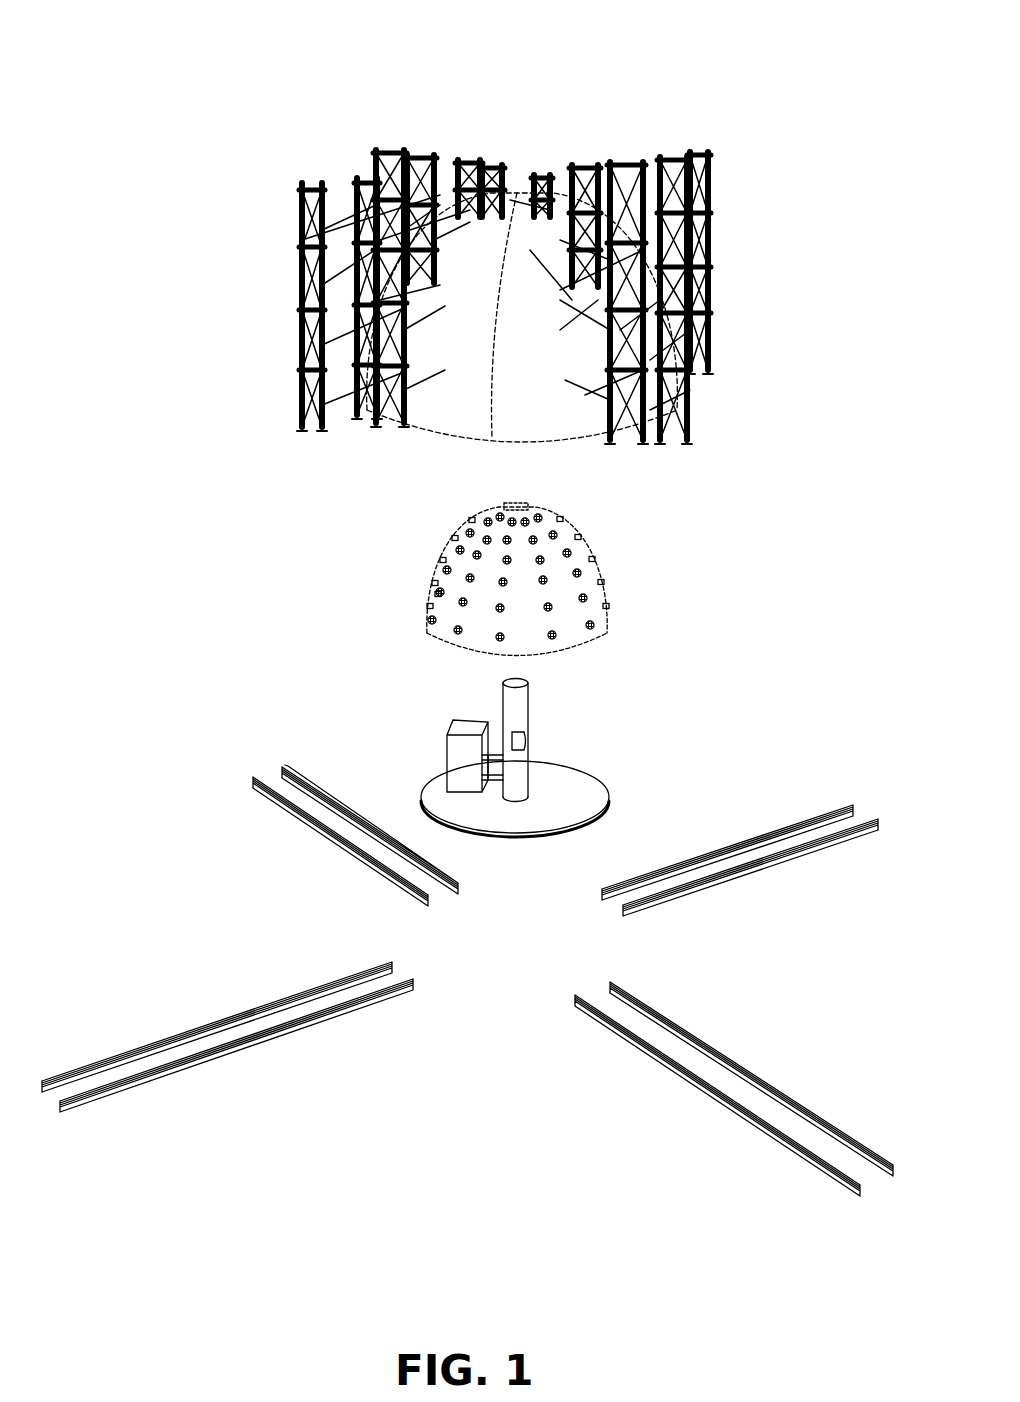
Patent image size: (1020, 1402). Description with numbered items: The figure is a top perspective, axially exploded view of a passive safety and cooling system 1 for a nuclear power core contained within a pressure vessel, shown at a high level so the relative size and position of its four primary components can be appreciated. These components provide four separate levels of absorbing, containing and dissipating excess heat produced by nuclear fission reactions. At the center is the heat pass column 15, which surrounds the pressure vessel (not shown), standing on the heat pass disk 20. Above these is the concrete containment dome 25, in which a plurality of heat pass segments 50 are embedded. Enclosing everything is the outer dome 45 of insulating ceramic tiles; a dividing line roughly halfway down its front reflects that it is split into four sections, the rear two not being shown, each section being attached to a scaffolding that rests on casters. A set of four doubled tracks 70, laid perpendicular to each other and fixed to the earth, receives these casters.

The system 1 is at (856, 117).
The outer dome 45 is at (408, 443).
The concrete containment dome 25 is at (487, 528).
The heat pass segments 50 is at (438, 593).
The heat pass column 15 is at (520, 712).
The heat pass disk 20 is at (566, 805).
The doubled tracks 70 is at (767, 1048).